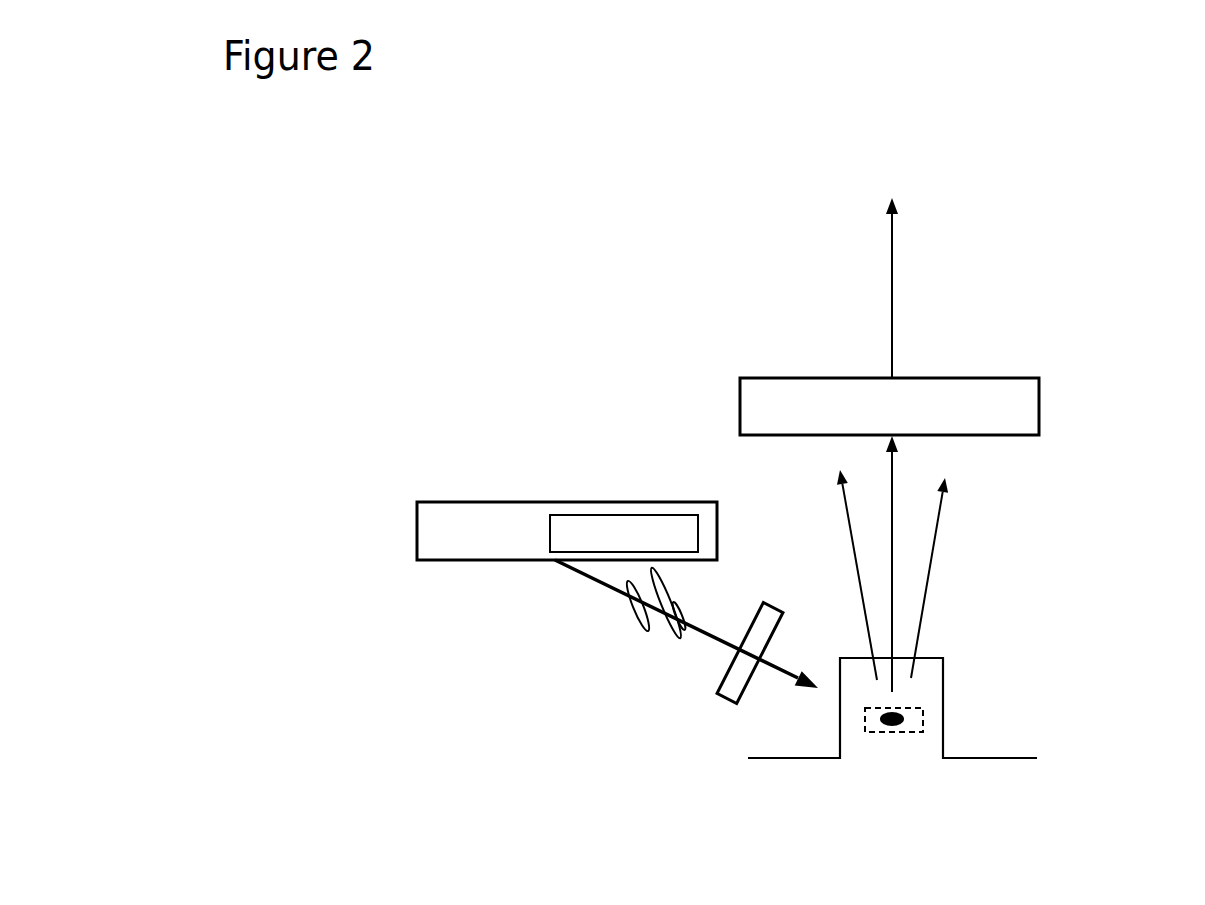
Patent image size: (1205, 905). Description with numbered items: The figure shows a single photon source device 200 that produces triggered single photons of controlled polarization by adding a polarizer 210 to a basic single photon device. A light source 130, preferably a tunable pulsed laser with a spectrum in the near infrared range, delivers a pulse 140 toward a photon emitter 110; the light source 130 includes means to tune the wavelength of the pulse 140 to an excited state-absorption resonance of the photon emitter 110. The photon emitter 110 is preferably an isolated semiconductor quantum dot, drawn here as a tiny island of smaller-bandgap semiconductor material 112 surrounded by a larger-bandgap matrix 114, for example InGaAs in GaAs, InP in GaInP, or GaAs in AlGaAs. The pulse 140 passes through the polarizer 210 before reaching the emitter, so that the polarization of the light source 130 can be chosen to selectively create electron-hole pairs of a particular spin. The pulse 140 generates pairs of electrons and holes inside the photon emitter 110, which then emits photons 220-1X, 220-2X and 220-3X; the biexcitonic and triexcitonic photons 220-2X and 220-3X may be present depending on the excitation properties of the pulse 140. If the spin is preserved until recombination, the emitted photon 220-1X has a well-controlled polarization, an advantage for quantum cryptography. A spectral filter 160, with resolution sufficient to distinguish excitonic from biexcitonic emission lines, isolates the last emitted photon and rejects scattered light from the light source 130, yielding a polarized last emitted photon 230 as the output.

The device 200 is at (418, 225).
The light source 130 is at (417, 534).
The pulse 140 is at (630, 632).
The polarizer 210 is at (717, 689).
The spectral filter 160 is at (740, 410).
The polarized last emitted photon 230 is at (896, 297).
The emitted photon 220-1X is at (893, 587).
The emitted photon 2X 220-2X is at (937, 527).
The emitted photon 3X 220-3X is at (870, 630).
The photon emitter 110 is at (972, 737).
The smaller-bandgap semiconductor material 112 is at (903, 715).
The larger-bandgap matrix 114 is at (913, 732).